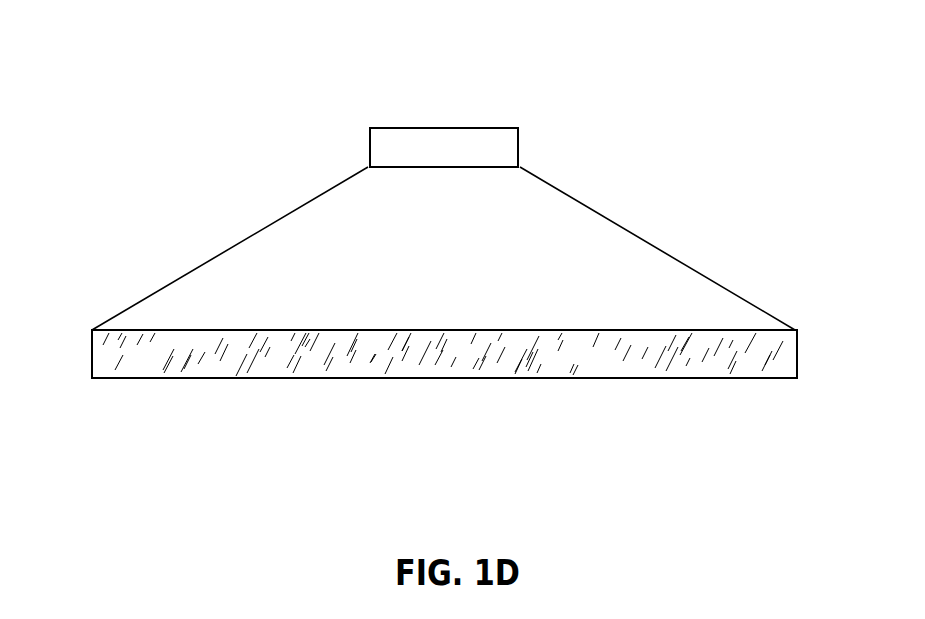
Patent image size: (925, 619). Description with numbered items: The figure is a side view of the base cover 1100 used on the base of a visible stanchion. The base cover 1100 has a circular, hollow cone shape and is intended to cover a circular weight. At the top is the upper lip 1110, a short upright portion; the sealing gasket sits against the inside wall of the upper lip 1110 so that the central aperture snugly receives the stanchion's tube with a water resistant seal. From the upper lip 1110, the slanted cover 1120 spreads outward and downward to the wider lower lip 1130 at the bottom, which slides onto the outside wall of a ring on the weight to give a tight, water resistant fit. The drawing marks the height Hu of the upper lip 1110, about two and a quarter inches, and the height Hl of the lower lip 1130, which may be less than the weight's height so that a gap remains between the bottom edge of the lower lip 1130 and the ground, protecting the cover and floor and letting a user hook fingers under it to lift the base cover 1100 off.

The base cover 1100 is at (236, 92).
The upper lip 1110 is at (518, 146).
The slanted cover 1120 is at (614, 234).
The lower lip 1130 is at (782, 352).
The height of the upper lip Hu is at (344, 153).
The height of the lower lip Hl is at (74, 361).